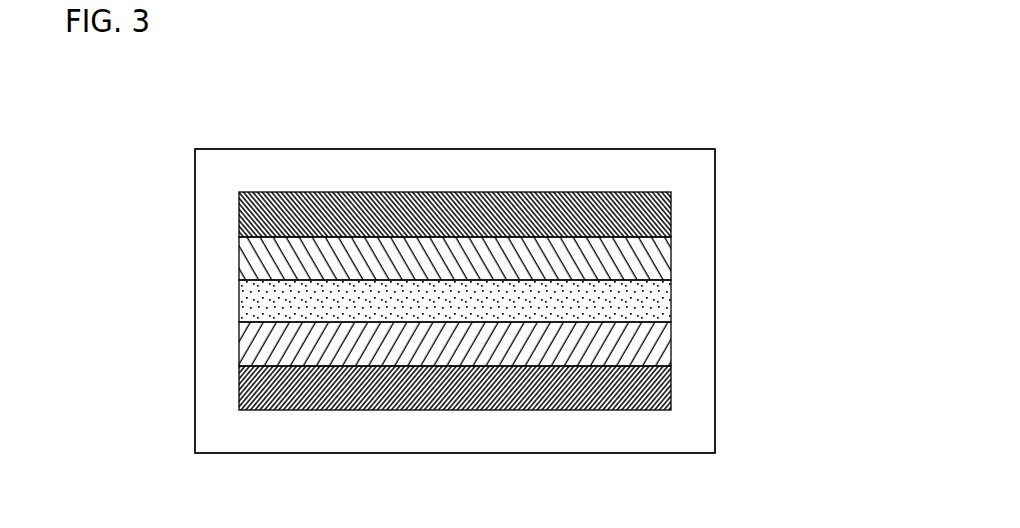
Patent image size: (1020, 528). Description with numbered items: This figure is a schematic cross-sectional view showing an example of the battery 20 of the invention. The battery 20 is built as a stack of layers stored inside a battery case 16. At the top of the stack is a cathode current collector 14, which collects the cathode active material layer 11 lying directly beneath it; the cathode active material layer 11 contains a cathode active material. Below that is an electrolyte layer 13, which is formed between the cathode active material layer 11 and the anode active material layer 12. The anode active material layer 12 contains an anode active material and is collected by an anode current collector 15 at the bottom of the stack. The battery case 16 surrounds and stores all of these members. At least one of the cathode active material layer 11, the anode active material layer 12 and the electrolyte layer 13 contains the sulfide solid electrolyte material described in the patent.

The battery 20 is at (697, 107).
The battery case 16 is at (692, 162).
The cathode current collector 14 is at (671, 202).
The cathode active material layer 11 is at (671, 247).
The electrolyte layer 13 is at (671, 292).
The anode active material layer 12 is at (671, 333).
The anode current collector 15 is at (671, 376).